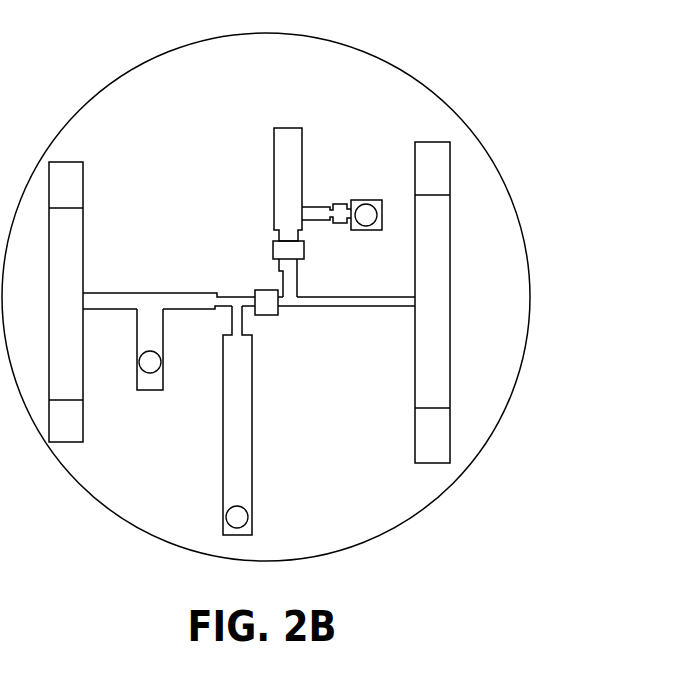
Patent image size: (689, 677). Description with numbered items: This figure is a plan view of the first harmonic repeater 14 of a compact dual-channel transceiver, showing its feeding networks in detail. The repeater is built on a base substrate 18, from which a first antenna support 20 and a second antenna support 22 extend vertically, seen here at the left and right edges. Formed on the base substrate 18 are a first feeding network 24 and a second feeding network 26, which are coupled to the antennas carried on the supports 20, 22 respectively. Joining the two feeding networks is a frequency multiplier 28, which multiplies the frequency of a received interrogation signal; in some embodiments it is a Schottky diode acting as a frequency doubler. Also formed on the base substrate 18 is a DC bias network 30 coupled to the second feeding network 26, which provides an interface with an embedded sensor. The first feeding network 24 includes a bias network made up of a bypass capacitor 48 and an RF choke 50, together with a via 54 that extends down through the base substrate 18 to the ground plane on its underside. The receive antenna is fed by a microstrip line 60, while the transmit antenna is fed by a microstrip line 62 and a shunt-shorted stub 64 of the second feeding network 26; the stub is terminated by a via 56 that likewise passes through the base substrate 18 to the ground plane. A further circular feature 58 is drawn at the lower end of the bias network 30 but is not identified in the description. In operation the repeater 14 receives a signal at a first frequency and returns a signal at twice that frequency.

The first harmonic repeater 14 is at (580, 180).
The base substrate 18 is at (278, 77).
The first antenna support 20 is at (394, 166).
The second antenna support 22 is at (110, 165).
The first feeding network 24 is at (242, 211).
The second feeding network 26 is at (154, 268).
The frequency multiplier 28 is at (265, 308).
The DC bias network 30 is at (292, 466).
The bypass capacitor 48 is at (355, 201).
The RF choke 50 is at (268, 251).
The via 54 is at (366, 222).
The via 56 is at (150, 370).
The second sensor 58 is at (227, 517).
The microstrip line 60 is at (348, 308).
The microstrip line 62 is at (114, 294).
The shunt-shorted stub 64 is at (164, 335).